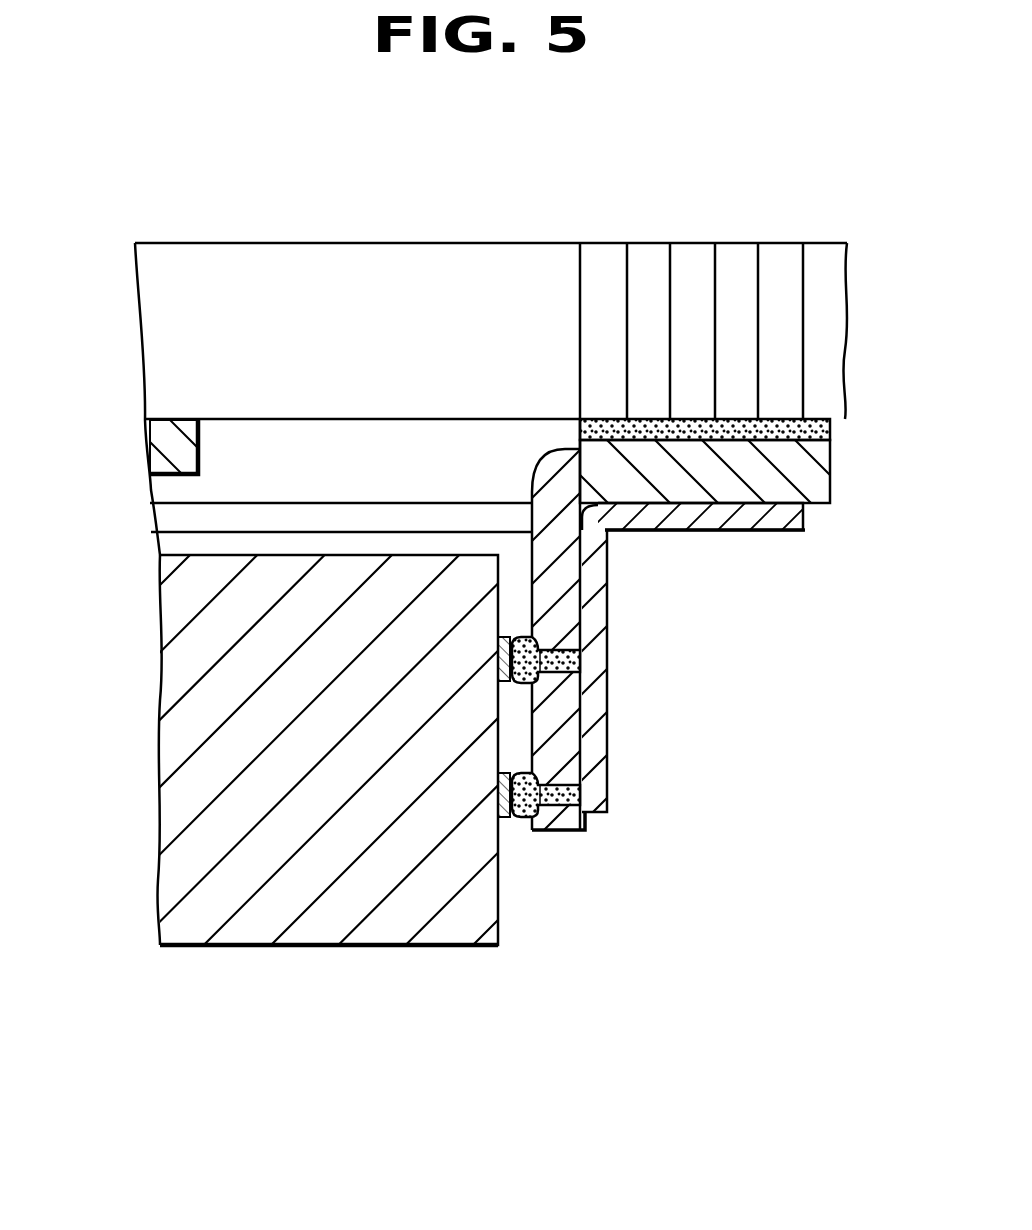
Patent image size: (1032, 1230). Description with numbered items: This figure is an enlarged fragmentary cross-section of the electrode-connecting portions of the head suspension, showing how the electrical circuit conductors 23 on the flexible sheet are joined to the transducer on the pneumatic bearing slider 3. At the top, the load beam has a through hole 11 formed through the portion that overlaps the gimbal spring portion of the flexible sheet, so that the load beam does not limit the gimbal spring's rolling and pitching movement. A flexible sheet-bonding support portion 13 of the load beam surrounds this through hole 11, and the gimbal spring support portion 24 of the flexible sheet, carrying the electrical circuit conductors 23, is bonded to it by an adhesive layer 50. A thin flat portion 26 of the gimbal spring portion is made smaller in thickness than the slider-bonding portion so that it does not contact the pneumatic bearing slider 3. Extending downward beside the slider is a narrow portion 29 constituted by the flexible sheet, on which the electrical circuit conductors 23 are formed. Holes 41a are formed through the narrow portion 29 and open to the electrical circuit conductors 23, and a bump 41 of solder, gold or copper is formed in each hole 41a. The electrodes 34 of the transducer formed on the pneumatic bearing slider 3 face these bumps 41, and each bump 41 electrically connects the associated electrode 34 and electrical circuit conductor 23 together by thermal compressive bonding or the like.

The through hole 11 is at (487, 268).
The flexible sheet-bonding support portion 13 is at (735, 258).
The adhesive layer 50 is at (832, 427).
The gimbal spring support portion 24 is at (820, 487).
The electrical circuit conductors 23 is at (775, 531).
The thin flat portion 26 is at (163, 445).
The narrow portion 29 is at (573, 586).
The bump 41 is at (575, 657).
The hole 41a is at (560, 667).
The electrode 34 is at (505, 683).
The pneumatic bearing slider 3 is at (345, 932).